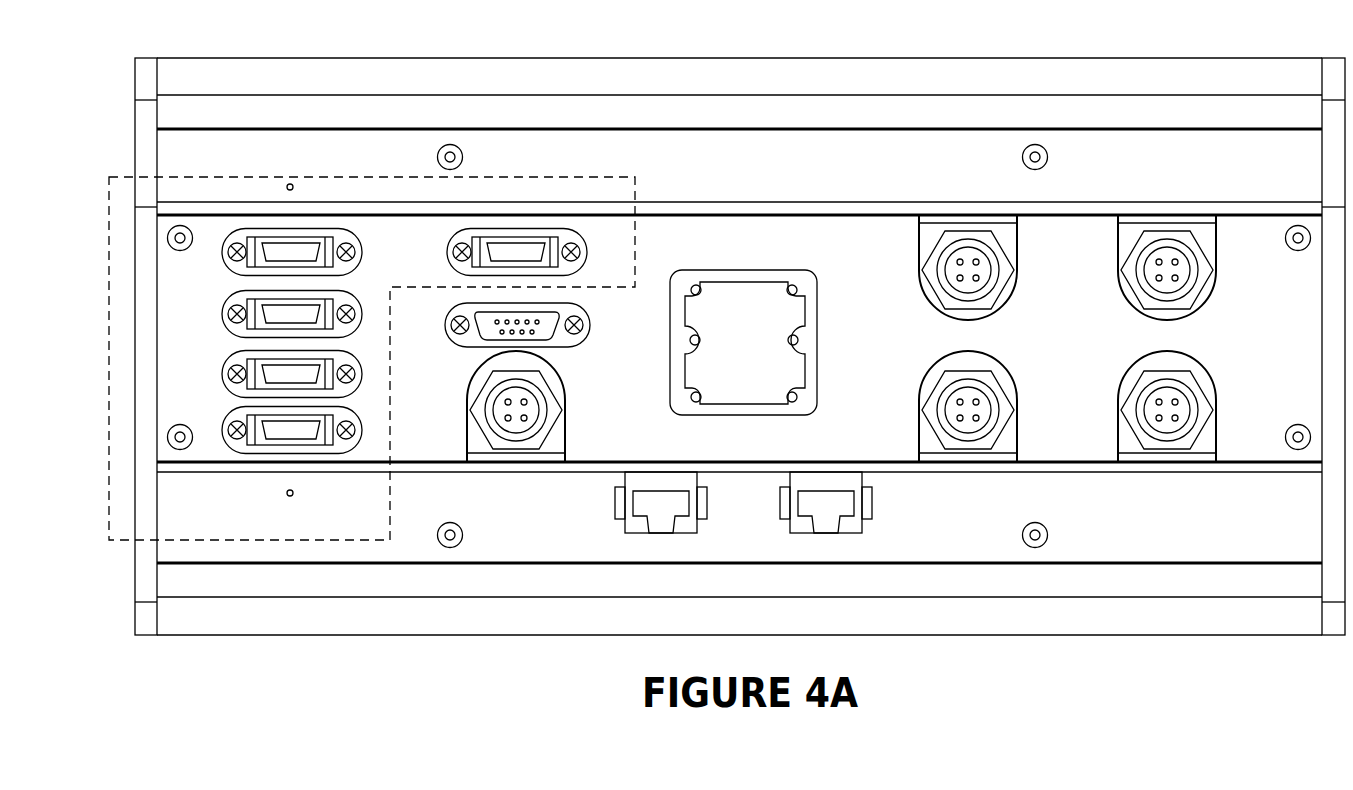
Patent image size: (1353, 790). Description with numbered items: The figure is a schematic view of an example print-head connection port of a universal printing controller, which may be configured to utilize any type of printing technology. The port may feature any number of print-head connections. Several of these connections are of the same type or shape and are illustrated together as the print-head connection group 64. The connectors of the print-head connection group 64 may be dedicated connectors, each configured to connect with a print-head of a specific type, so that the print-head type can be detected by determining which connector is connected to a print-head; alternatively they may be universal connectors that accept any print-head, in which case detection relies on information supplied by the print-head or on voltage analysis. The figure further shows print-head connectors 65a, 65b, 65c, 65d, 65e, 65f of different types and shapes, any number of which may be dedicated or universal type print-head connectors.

The print-head connection group 64 is at (109, 330).
The print-head connector 65a is at (560, 340).
The print-head connector 65b is at (556, 445).
The print-head connector 65c is at (919, 243).
The print-head connector 65d is at (1118, 245).
The print-head connector 65e is at (919, 428).
The print-head connector 65f is at (1210, 437).